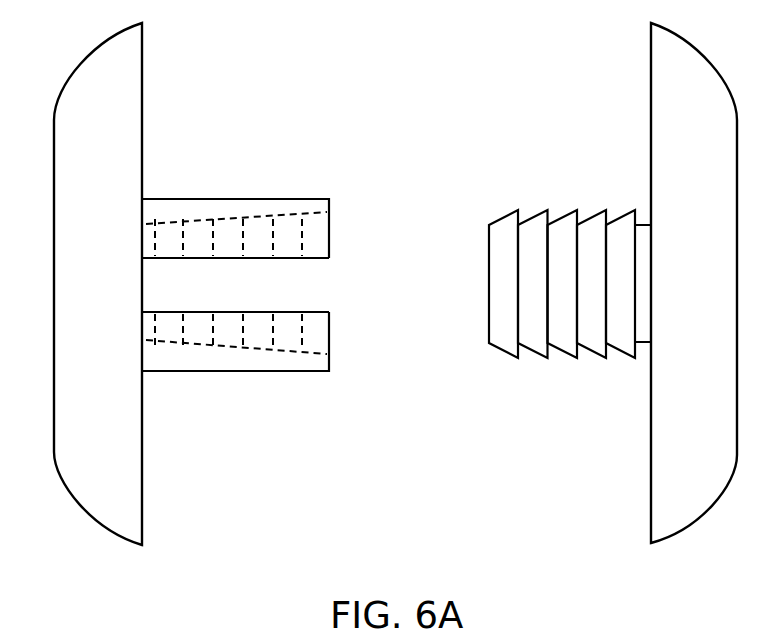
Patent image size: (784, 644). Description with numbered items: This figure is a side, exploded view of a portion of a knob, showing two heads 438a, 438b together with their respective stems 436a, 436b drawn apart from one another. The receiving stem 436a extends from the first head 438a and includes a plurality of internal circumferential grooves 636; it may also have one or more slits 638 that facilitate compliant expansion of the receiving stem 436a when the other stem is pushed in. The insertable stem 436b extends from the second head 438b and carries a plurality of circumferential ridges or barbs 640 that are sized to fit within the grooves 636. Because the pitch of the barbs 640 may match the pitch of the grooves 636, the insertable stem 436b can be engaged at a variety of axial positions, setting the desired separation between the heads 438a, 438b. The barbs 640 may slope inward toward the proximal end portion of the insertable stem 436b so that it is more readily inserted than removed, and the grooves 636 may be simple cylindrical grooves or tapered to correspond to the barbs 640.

The head 438a is at (77, 92).
The head 438b is at (703, 90).
The receiving stem 436a is at (262, 283).
The insertable stem 436b is at (546, 298).
The internal circumferential grooves 636 is at (285, 350).
The slits 638 is at (251, 259).
The circumferential ridges or barbs 640 is at (537, 227).